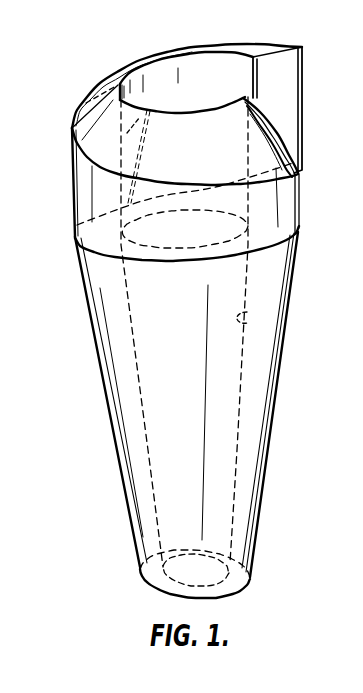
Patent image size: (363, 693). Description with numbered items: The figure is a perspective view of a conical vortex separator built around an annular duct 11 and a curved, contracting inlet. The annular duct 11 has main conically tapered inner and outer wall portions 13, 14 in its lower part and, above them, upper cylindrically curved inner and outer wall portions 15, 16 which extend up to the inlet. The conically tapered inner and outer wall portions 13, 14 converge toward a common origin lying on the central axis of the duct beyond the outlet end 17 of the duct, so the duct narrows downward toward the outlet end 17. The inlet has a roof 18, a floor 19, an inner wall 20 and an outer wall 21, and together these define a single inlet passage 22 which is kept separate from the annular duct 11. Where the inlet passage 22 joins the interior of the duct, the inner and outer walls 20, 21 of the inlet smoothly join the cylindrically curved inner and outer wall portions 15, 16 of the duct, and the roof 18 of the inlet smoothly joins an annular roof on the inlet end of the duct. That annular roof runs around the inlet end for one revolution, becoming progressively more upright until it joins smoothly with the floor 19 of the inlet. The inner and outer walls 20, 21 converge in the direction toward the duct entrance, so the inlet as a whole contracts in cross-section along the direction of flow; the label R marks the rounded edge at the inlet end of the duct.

The radius of rounded rim edge R is at (101, 79).
The annular duct 11 is at (276, 394).
The conically tapered inner wall portion 13 is at (249, 317).
The conically tapered outer wall portion 14 is at (101, 376).
The cylindrically curved inner wall portion 15 is at (178, 106).
The cylindrically curved outer wall portion 16 is at (73, 164).
The outlet end 17 is at (239, 589).
The roof 18 is at (220, 50).
The floor 19 is at (290, 148).
The inner wall 20 is at (252, 73).
The outer wall 21 is at (302, 117).
The inlet passage 22 is at (283, 74).